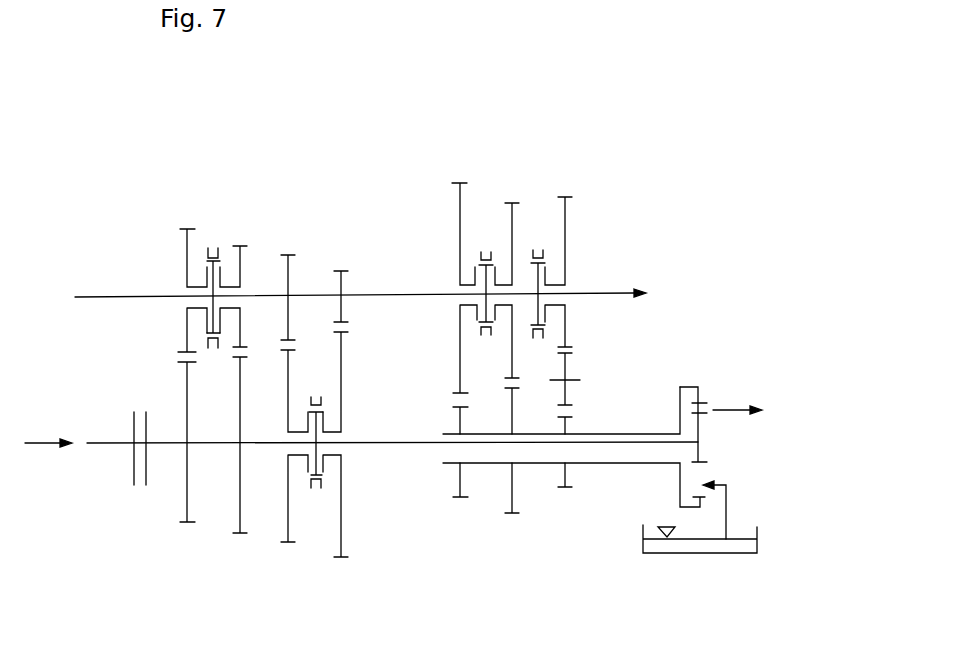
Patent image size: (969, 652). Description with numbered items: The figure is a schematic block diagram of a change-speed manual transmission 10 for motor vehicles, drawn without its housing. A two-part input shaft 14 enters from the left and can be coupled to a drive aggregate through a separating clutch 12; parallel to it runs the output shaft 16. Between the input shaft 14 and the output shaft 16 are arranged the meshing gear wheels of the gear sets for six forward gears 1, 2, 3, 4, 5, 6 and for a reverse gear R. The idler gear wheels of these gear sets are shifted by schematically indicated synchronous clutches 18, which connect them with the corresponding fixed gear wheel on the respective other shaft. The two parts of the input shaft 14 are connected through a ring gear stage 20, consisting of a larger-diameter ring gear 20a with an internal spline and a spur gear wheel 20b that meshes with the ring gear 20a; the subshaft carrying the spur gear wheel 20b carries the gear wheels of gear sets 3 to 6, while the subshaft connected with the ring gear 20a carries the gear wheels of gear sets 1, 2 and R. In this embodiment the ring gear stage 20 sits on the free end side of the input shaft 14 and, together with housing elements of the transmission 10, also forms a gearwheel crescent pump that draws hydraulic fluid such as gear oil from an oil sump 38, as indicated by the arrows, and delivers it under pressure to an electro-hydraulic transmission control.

The manual transmission 10 is at (630, 165).
The separating clutch 12 is at (134, 458).
The input shaft 14 is at (395, 455).
The output shaft 16 is at (393, 294).
The synchronous clutch 18 is at (213, 233).
The ring gear stage 20 is at (716, 357).
The ring gear 20a is at (680, 388).
The spur gear wheel 20b is at (700, 452).
The oil sump 38 is at (758, 540).
The first forward gear 1 is at (464, 399).
The second forward gear 2 is at (507, 409).
The third forward gear 3 is at (192, 422).
The fourth forward gear 4 is at (234, 431).
The fifth forward gear 5 is at (294, 435).
The sixth forward gear 6 is at (336, 443).
The reverse gear R is at (562, 406).